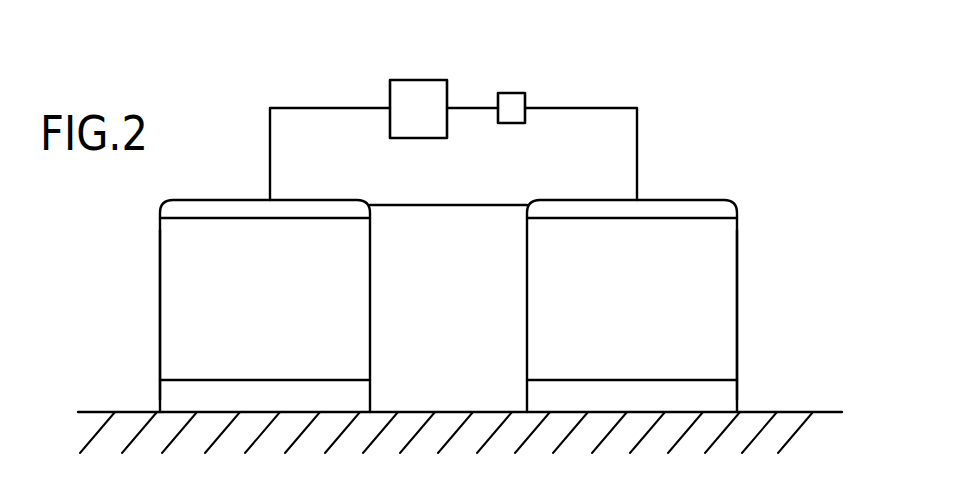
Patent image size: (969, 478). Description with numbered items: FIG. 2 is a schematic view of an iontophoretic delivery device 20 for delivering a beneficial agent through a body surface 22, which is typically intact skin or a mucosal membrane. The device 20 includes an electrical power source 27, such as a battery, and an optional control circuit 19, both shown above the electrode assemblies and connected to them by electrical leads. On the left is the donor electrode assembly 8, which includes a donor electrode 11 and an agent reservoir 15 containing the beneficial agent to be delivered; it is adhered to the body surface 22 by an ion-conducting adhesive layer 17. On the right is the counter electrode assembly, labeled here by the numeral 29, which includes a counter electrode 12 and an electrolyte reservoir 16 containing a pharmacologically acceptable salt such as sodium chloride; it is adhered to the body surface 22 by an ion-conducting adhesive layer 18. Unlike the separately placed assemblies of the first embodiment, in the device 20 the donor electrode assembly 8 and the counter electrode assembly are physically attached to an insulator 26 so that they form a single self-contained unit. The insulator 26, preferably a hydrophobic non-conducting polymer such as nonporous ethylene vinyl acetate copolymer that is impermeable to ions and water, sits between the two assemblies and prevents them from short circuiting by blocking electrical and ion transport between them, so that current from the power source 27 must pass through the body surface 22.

The donor electrode assembly 8 is at (148, 210).
The donor electrode 11 is at (232, 208).
The counter electrode 12 is at (665, 210).
The agent reservoir 15 is at (168, 317).
The electrolyte reservoir 16 is at (722, 247).
The ion-conducting adhesive layer 17 is at (168, 393).
The ion-conducting adhesive layer 18 is at (723, 390).
The control circuit 19 is at (517, 123).
The iontophoretic delivery device 20 is at (274, 100).
The body surface 22 is at (442, 410).
The insulator 26 is at (455, 222).
The electrical power source 27 is at (413, 128).
The second unit 29 is at (736, 184).